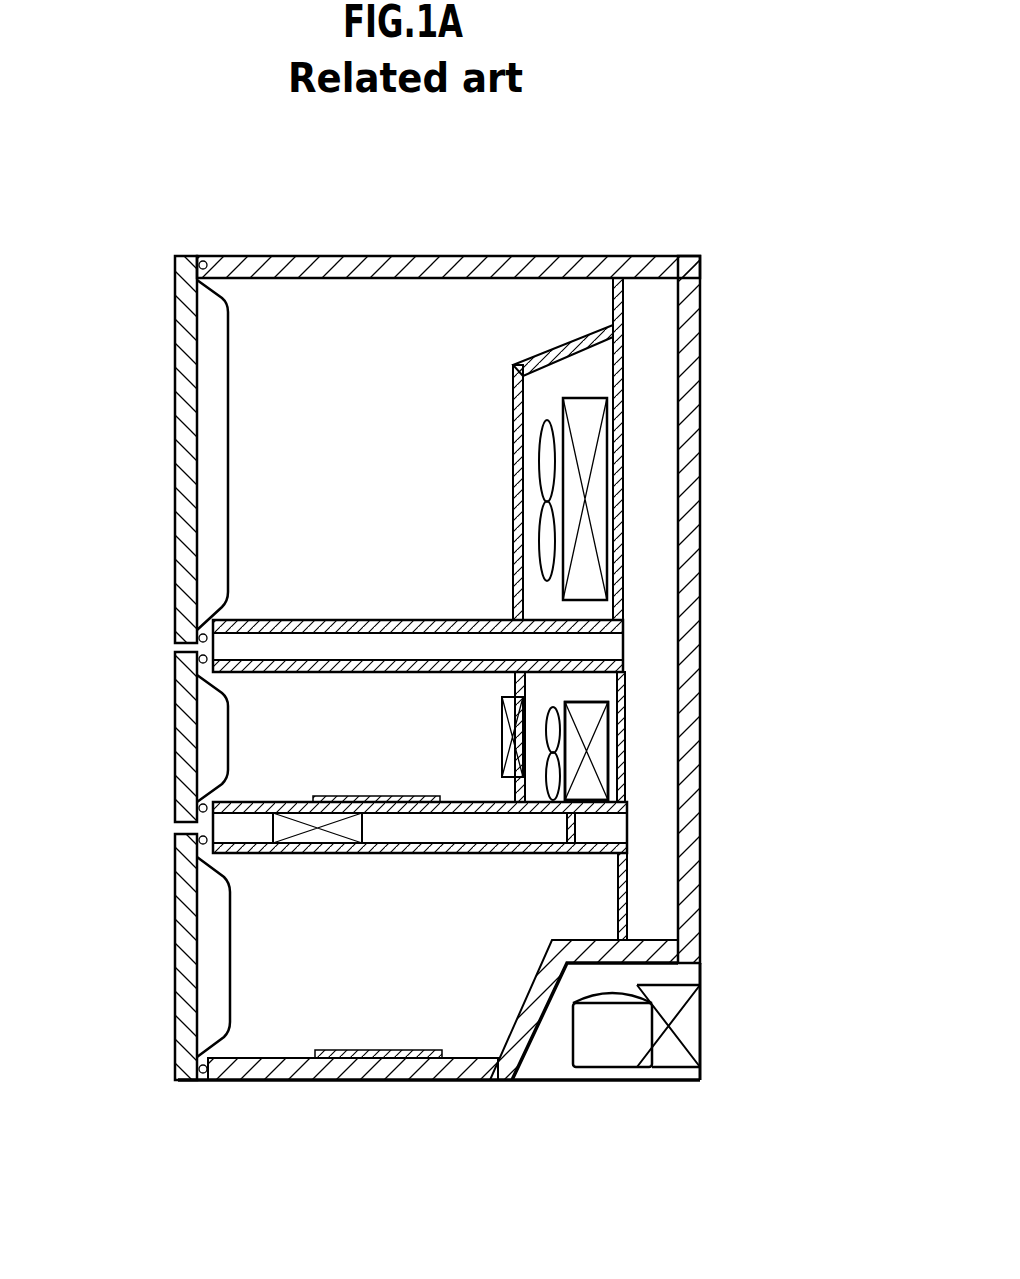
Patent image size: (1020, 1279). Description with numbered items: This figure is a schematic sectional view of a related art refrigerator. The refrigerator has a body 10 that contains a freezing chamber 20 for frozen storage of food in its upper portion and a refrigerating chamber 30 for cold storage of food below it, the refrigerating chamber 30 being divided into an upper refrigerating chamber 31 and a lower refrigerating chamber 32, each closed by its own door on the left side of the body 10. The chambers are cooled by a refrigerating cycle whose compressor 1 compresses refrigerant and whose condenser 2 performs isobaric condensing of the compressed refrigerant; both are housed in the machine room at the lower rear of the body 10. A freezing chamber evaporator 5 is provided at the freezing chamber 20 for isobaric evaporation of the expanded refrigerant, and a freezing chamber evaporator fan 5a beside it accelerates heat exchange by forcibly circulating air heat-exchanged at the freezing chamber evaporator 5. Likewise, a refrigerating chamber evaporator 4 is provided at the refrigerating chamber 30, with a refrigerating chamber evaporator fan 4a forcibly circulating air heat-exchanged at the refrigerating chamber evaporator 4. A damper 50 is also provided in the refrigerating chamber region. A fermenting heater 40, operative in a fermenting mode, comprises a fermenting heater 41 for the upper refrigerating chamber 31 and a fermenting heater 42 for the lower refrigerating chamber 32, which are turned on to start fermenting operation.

The body 10 is at (345, 257).
The freezing chamber 20 is at (240, 495).
The refrigerating chamber 30 is at (98, 754).
The upper refrigerating chamber 31 is at (256, 757).
The lower refrigerating chamber 32 is at (263, 902).
The freezing chamber evaporator 5 is at (573, 412).
The freezing chamber evaporator fan 5a is at (547, 455).
The damper 50 is at (323, 817).
The refrigerating chamber evaporator fan 4a is at (548, 783).
The refrigerating chamber evaporator 4 is at (580, 793).
The fermenting heater 40 is at (355, 1153).
The fermenting heater for the upper refrigerating chamber 41 is at (373, 803).
The fermenting heater for the lower refrigerating chamber 42 is at (372, 1055).
The compressor 1 is at (607, 1053).
The condenser 2 is at (672, 1055).